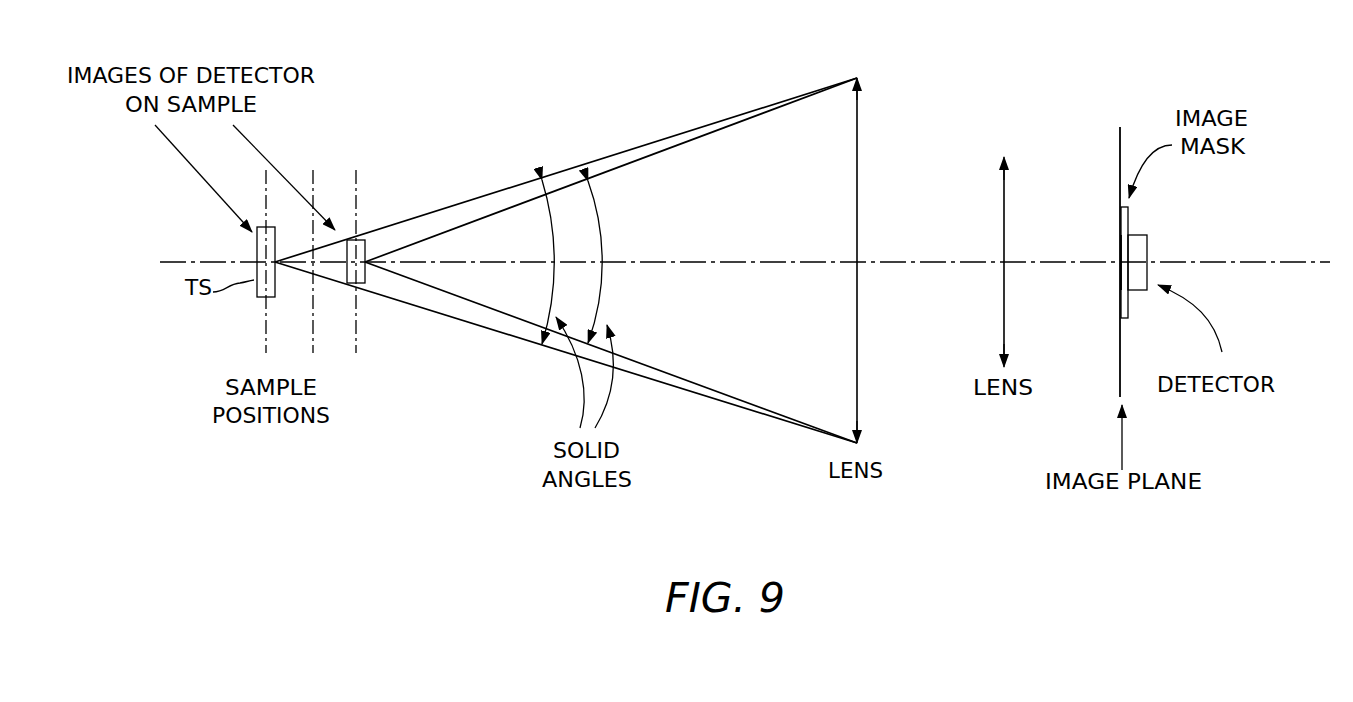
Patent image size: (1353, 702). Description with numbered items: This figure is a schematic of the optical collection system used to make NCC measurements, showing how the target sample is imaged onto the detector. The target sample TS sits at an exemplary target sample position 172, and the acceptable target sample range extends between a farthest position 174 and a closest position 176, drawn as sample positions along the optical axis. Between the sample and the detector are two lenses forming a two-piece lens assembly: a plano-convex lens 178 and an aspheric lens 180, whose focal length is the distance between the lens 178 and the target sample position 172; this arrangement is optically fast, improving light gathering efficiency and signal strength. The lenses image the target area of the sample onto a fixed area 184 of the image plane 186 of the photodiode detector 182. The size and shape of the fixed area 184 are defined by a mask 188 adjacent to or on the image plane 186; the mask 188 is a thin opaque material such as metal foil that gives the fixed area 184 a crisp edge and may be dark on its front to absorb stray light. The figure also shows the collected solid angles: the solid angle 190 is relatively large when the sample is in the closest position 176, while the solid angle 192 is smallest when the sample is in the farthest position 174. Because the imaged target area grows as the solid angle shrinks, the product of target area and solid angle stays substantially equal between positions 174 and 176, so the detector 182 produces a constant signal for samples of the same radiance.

The target sample position 172 is at (313, 343).
The farthest sample position 174 is at (258, 339).
The closest sample position 176 is at (357, 340).
The plano-convex lens 178 is at (1003, 320).
The aspheric lens 180 is at (857, 140).
The photodiode detector 182 is at (1147, 250).
The fixed area 184 is at (1120, 253).
The image plane 186 is at (1120, 385).
The mask 188 is at (1120, 222).
The solid angle 190 is at (603, 223).
The solid angle 192 is at (551, 231).